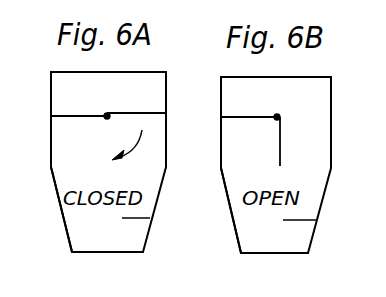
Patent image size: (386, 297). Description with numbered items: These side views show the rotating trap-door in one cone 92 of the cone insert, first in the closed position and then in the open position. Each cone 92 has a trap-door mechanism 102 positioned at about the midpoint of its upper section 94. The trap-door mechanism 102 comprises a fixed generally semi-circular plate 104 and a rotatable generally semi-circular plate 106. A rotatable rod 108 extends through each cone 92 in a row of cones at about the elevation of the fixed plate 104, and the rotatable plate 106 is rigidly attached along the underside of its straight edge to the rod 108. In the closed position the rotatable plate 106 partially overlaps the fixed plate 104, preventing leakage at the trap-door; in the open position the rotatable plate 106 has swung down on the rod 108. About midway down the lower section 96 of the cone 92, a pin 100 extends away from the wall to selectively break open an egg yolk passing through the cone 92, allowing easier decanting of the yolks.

In FIG. 6A, the cone 92 is at (89, 162).
In FIG. 6B, the cone 92 is at (260, 165).
In FIG. 6A, the upper section 94 is at (167, 92).
In FIG. 6B, the upper section 94 is at (332, 100).
In FIG. 6A, the lower section 96 is at (62, 218).
In FIG. 6B, the lower section 96 is at (230, 217).
In FIG. 6A, the pin 100 is at (132, 222).
In FIG. 6B, the pin 100 is at (298, 222).
In FIG. 6A, the trap-door mechanism 102 is at (108, 84).
In FIG. 6B, the trap-door mechanism 102 is at (276, 88).
In FIG. 6A, the fixed generally semi-circular plate 104 is at (73, 115).
In FIG. 6B, the fixed generally semi-circular plate 104 is at (238, 116).
In FIG. 6A, the rotatable generally semi-circular plate 106 is at (141, 113).
In FIG. 6B, the rotatable generally semi-circular plate 106 is at (283, 143).
In FIG. 6A, the rotatable rod 108 is at (106, 118).
In FIG. 6B, the rotatable rod 108 is at (276, 118).